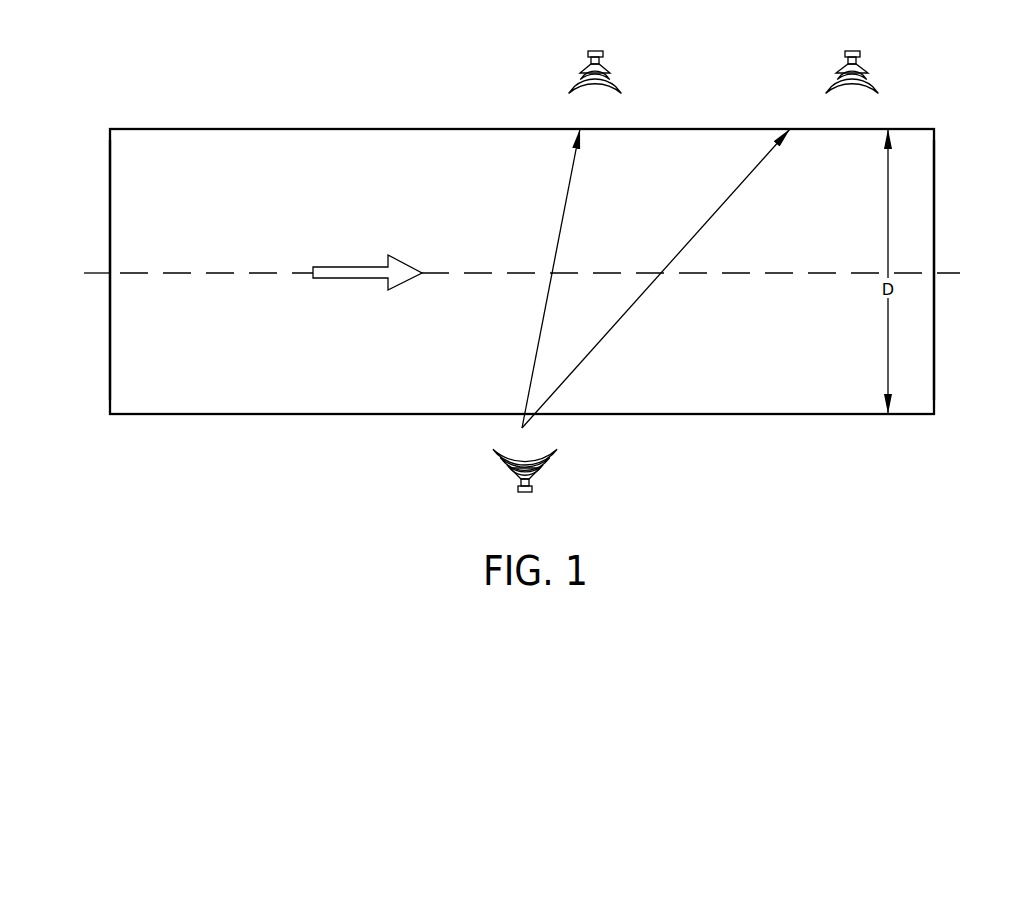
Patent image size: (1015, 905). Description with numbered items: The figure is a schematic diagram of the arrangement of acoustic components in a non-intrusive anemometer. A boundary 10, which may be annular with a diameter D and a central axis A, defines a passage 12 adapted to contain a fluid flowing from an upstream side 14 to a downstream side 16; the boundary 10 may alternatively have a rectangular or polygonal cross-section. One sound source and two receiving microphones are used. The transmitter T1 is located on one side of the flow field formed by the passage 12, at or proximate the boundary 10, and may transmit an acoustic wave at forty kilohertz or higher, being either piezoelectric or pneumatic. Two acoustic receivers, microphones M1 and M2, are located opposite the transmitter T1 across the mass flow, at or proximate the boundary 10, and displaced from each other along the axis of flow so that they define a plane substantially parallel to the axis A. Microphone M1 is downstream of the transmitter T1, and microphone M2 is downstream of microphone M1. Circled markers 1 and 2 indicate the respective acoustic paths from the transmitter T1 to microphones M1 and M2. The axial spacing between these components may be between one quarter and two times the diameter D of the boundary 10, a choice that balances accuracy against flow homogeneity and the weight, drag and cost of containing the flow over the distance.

The boundary 10 is at (295, 129).
The passage 12 is at (210, 155).
The upstream side 14 is at (110, 183).
The downstream side 16 is at (934, 183).
The first acoustic path 1 is at (575, 278).
The second acoustic path 2 is at (681, 278).
The microphone M1 is at (570, 70).
The microphone M2 is at (823, 70).
The transmitter T1 is at (500, 473).